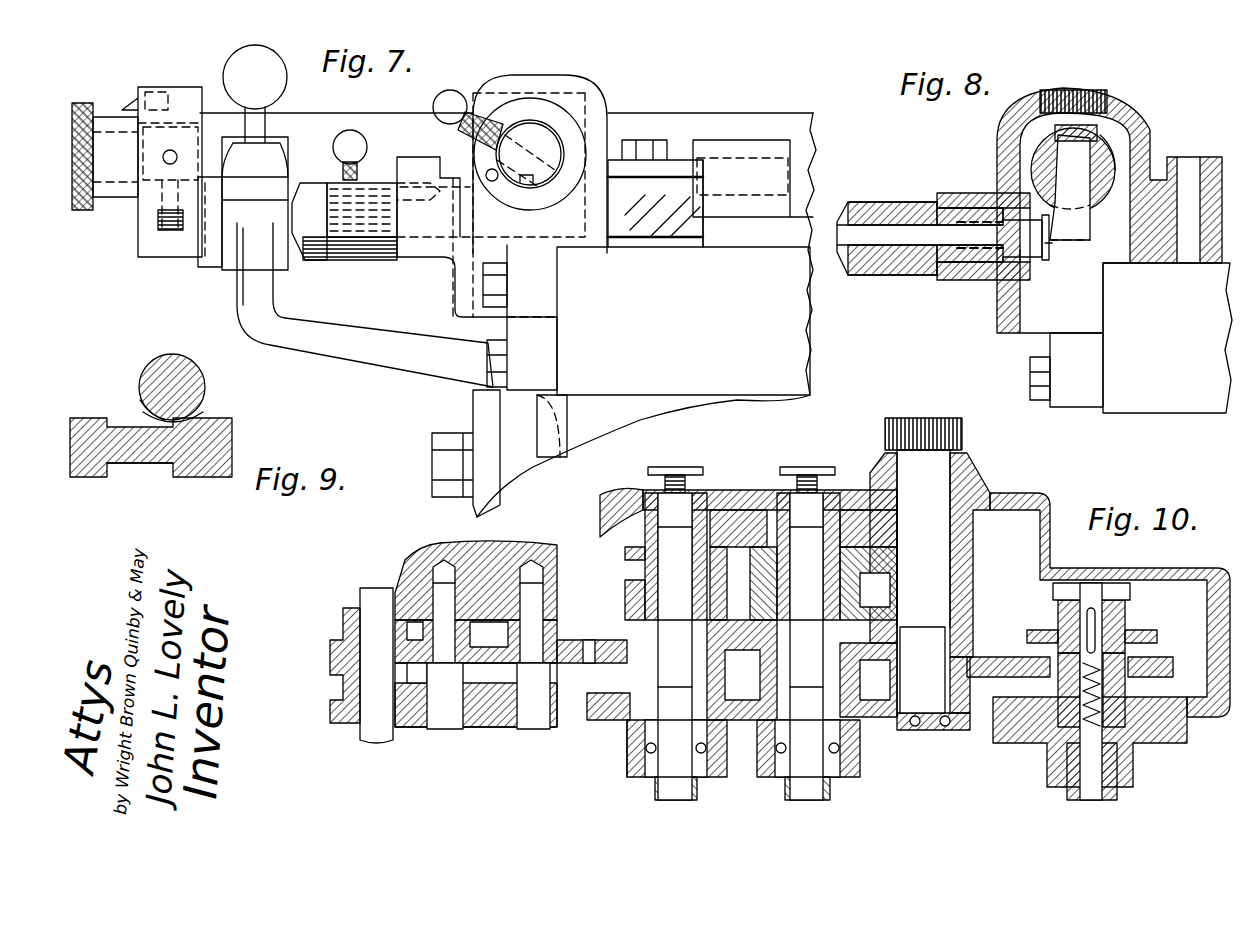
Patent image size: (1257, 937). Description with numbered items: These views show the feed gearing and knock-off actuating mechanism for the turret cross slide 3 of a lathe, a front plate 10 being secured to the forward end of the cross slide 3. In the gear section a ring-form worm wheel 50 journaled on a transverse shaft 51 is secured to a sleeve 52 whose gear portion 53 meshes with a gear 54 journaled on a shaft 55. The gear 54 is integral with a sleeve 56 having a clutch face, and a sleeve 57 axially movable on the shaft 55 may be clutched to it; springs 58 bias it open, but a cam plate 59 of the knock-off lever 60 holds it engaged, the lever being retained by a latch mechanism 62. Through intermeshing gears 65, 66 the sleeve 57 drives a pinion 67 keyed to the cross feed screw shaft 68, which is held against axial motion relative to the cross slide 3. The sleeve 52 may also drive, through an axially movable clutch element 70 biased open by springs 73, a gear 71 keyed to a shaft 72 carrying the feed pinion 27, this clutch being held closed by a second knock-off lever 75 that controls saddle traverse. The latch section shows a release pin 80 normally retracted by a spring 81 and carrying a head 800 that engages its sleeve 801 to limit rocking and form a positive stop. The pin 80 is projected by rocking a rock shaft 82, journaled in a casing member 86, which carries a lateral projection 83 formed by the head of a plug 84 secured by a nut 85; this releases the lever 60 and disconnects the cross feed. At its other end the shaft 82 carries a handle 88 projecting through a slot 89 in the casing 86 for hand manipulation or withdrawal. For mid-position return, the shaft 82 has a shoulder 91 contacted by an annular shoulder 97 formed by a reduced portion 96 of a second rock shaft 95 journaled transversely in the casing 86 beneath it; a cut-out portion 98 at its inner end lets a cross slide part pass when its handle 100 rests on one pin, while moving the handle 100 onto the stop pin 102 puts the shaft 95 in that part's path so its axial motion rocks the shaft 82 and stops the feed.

In FIG. 7, the front plate 10 is at (183, 88).
In FIG. 7, the cross slide 3 is at (370, 114).
In FIG. 7, the latch mechanism 62 is at (307, 187).
In FIG. 8, the latch mechanism 62 is at (878, 270).
In FIG. 7, the handle 100 is at (364, 150).
In FIG. 7, the handle 88 is at (463, 92).
In FIG. 7, the slot 89 is at (490, 120).
In FIG. 7, the rock shaft 82 is at (545, 140).
In FIG. 9, the rock shaft 82 is at (193, 365).
In FIG. 8, the rock shaft 82 is at (1095, 152).
In FIG. 7, the casing member 86 is at (606, 107).
In FIG. 8, the casing member 86 is at (1167, 247).
In FIG. 7, the shoulder 91 is at (477, 188).
In FIG. 9, the shoulder 91 is at (140, 410).
In FIG. 7, the portion of reduced diameter 96 is at (483, 203).
In FIG. 9, the portion of reduced diameter 96 is at (160, 477).
In FIG. 7, the cut-out portion 98 is at (637, 223).
In FIG. 7, the stop pin 102 is at (340, 245).
In FIG. 7, the second rock shaft 95 is at (373, 243).
In FIG. 9, the second rock shaft 95 is at (222, 447).
In FIG. 7, the knock-off lever 60 is at (356, 350).
In FIG. 10, the knock-off lever 60 is at (627, 753).
In FIG. 9, the annular shoulder 97 is at (180, 413).
In FIG. 8, the release pin 80 is at (883, 233).
In FIG. 8, the spring 81 is at (967, 190).
In FIG. 8, the nut 85 is at (1092, 133).
In FIG. 8, the plug 84 is at (1073, 184).
In FIG. 8, the lateral projection 83 is at (1080, 227).
In FIG. 8, the sleeve 801 is at (1023, 260).
In FIG. 8, the head 800 is at (1047, 243).
In FIG. 10, the feed pinion 27 is at (947, 418).
In FIG. 10, the gear portion 53 is at (727, 547).
In FIG. 10, the springs 73 is at (877, 593).
In FIG. 10, the gear 65 is at (573, 627).
In FIG. 10, the gear 66 is at (470, 647).
In FIG. 10, the cross feed screw shaft 68 is at (370, 603).
In FIG. 10, the pinion 67 is at (335, 653).
In FIG. 10, the gear 54 is at (630, 560).
In FIG. 10, the shaft 55 is at (676, 633).
In FIG. 10, the sleeve 56 is at (635, 598).
In FIG. 10, the sleeve 52 is at (857, 560).
In FIG. 10, the worm wheel 50 is at (887, 583).
In FIG. 10, the shaft 72 is at (940, 573).
In FIG. 10, the gear 71 is at (960, 647).
In FIG. 10, the clutch element 70 is at (877, 640).
In FIG. 10, the transverse shaft 51 is at (808, 633).
In FIG. 10, the sleeve 57 is at (747, 660).
In FIG. 10, the springs 58 is at (630, 700).
In FIG. 10, the cam plate 59 is at (642, 773).
In FIG. 10, the knock-off lever 75 is at (860, 752).